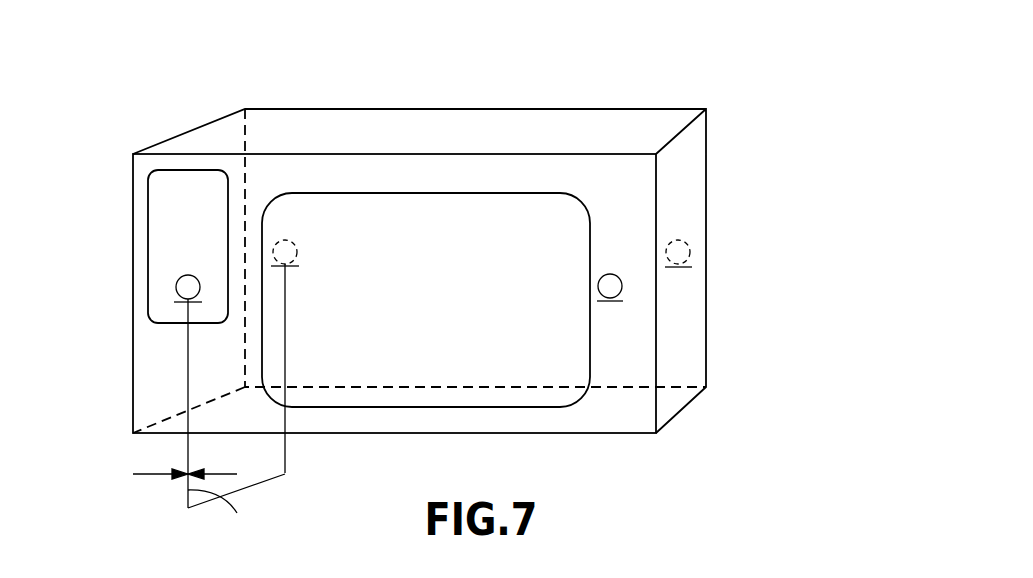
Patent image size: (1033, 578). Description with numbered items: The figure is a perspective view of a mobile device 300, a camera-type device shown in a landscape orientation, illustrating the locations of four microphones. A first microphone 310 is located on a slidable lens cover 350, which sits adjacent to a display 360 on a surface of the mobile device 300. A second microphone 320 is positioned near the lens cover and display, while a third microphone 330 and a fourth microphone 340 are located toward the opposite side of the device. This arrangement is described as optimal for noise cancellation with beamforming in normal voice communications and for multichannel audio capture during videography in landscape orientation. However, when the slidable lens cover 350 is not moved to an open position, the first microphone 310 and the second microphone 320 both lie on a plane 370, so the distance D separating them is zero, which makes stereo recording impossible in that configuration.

The mobile device 300 is at (720, 137).
The first microphone 310 is at (280, 256).
The second microphone 320 is at (294, 243).
The third microphone 330 is at (689, 249).
The fourth microphone 340 is at (623, 286).
The slidable lens cover 350 is at (148, 212).
The display 360 is at (588, 387).
The plane 370 is at (285, 458).